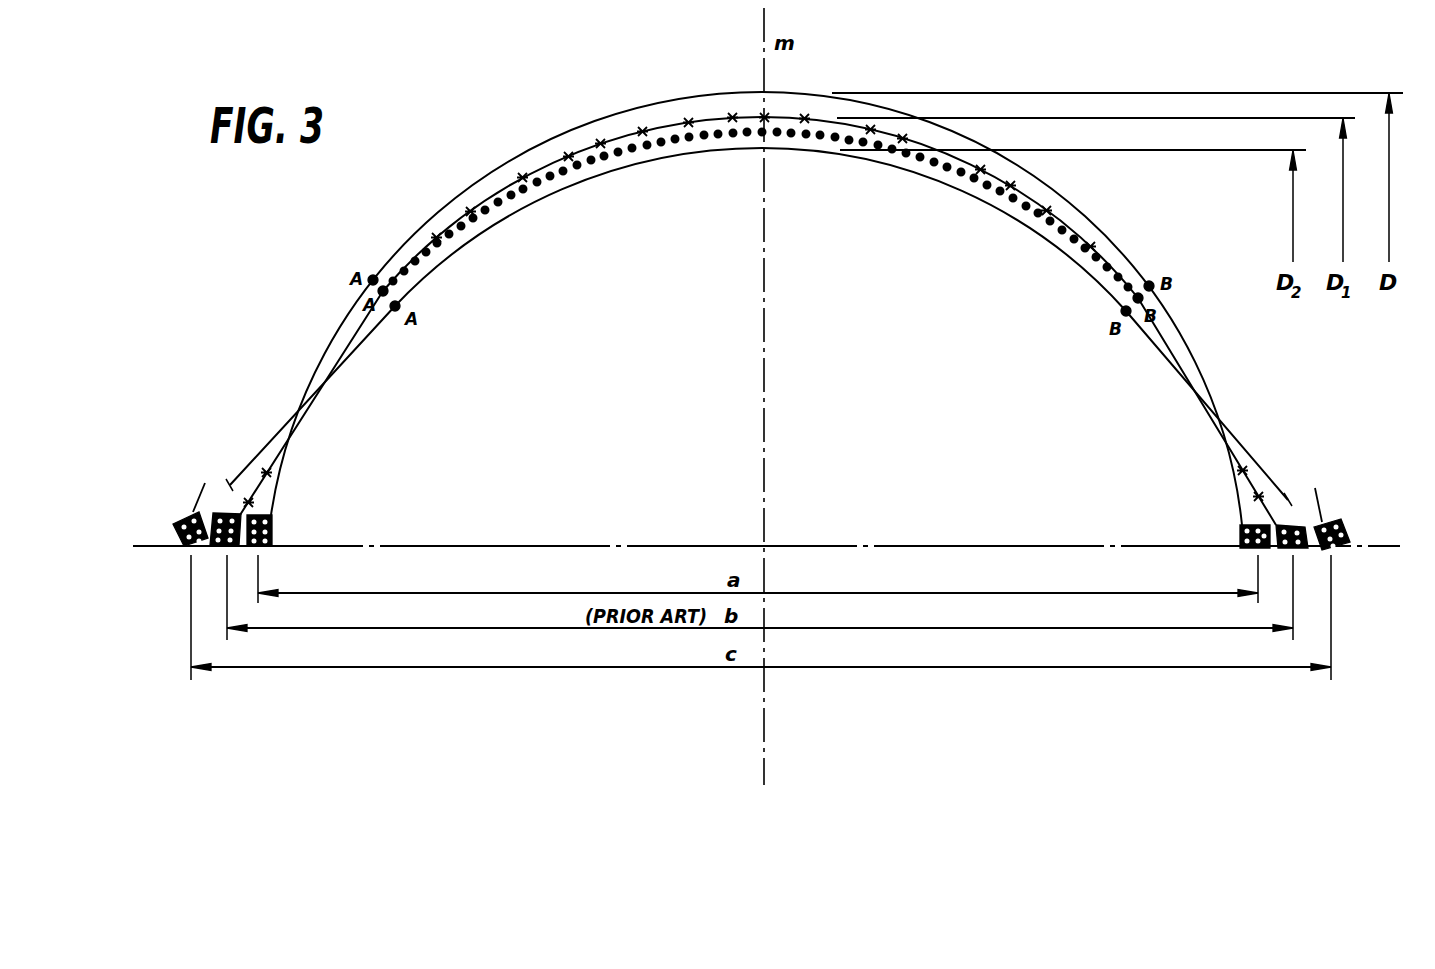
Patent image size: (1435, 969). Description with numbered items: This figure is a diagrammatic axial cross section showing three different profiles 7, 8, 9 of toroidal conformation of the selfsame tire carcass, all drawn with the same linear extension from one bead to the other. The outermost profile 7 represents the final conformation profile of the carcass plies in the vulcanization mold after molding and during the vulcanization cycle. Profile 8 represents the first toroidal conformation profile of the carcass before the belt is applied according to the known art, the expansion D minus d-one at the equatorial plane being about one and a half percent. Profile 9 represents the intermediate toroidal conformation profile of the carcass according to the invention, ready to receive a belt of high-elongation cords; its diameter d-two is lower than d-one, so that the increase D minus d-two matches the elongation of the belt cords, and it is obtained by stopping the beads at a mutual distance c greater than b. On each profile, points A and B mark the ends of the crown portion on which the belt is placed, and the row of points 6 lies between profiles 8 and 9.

The points on the arch 6 is at (986, 186).
The final conformation profile 7 is at (531, 148).
The first toroidal conformation profile 8 is at (614, 137).
The intermediate toroidal conformation profile 9 is at (839, 154).